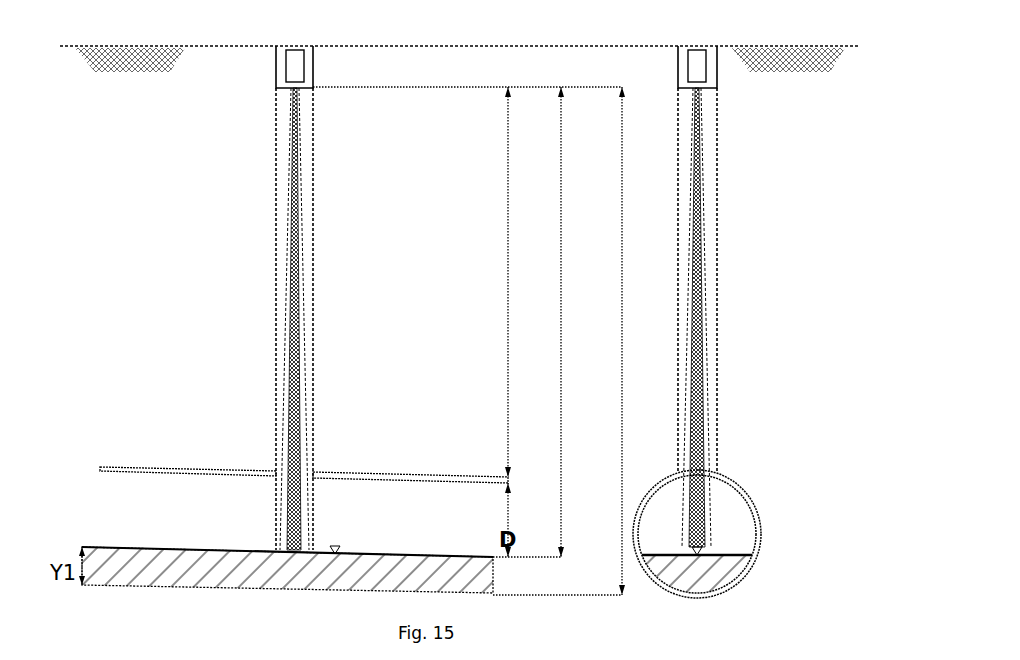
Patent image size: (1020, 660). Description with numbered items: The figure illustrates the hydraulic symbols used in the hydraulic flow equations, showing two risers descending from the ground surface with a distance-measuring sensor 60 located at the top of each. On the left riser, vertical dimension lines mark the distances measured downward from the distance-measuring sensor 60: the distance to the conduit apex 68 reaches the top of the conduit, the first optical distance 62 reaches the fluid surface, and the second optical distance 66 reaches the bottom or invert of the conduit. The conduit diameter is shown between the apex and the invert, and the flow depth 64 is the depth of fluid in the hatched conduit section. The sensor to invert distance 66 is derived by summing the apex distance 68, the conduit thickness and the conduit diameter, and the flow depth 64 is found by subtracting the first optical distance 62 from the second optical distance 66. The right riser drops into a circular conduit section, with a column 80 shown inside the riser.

The distance-measuring sensor 60 is at (291, 44).
The first optical distance 62 is at (560, 275).
The flow depth 64 is at (78, 545).
The second optical distance 66 is at (621, 275).
The distance to conduit apex 68 is at (507, 275).
The drop shaft column 80 is at (702, 380).